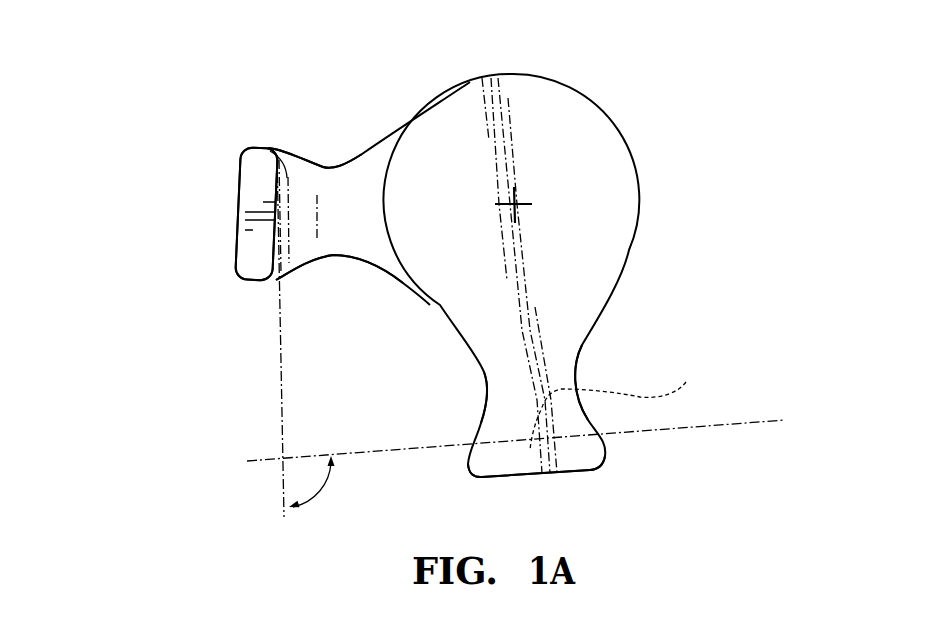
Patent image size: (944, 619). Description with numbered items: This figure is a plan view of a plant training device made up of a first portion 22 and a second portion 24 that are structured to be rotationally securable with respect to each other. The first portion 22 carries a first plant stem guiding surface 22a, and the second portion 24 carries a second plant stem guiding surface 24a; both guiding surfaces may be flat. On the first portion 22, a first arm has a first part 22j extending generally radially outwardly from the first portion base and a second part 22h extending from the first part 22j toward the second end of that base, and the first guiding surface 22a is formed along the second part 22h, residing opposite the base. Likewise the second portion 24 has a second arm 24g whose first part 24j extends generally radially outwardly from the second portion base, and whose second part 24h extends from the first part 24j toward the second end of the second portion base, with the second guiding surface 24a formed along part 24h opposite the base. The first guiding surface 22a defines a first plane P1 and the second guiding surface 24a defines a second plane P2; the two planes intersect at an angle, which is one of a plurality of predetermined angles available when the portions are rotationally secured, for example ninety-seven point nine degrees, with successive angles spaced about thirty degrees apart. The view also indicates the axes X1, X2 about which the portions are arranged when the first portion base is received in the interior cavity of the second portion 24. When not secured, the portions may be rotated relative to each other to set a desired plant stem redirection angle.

The first portion 22 is at (455, 112).
The first plant stem guiding surface 22a is at (620, 405).
The second part of the first arm 22h is at (537, 478).
The first part of the first arm 22j is at (547, 378).
The second portion 24 is at (365, 270).
The second plant stem guiding surface 24a is at (292, 160).
The second arm 24g is at (350, 216).
The second part of the second arm 24h is at (238, 215).
The first part of the second arm 24j is at (343, 180).
The first axis X1 is at (604, 275).
The second axis X2 is at (515, 205).
The first plane P1 is at (713, 427).
The second plane P2 is at (282, 403).